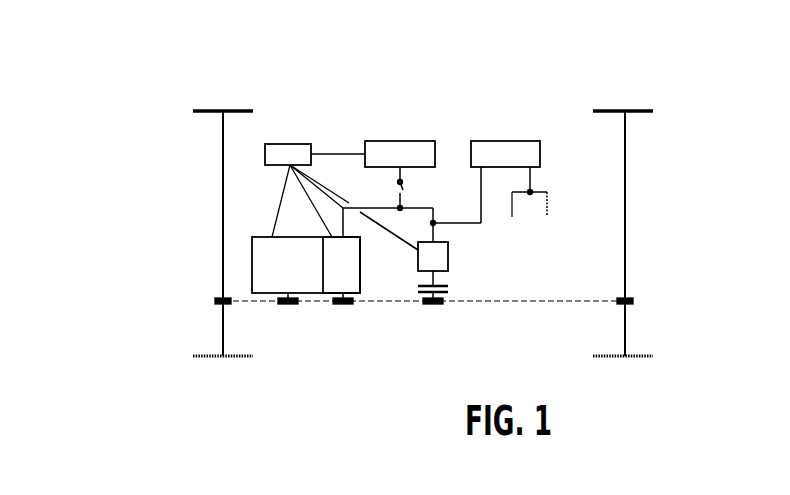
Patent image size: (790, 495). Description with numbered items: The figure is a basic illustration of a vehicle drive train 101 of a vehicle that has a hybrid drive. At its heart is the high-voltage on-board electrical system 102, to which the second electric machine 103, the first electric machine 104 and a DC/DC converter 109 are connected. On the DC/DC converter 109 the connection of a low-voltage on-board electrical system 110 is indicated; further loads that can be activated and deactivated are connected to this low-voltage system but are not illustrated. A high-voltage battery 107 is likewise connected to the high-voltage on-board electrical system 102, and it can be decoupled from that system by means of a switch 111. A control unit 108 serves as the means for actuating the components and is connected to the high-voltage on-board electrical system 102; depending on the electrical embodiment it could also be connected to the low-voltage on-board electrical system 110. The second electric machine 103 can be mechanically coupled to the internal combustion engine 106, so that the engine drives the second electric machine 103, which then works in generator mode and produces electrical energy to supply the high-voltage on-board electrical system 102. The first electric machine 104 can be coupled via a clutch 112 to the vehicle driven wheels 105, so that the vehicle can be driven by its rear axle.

The vehicle drive train 101 is at (158, 275).
The high-voltage on-board electrical system 102 is at (380, 204).
The second electric machine 103 is at (343, 307).
The first electric machine 104 is at (450, 258).
The vehicle driven wheels 105 is at (208, 110).
The internal combustion engine 106 is at (288, 307).
The high-voltage battery 107 is at (400, 141).
The control unit 108 is at (286, 143).
The DC/DC converter 109 is at (504, 141).
The low-voltage on-board electrical system 110 is at (540, 191).
The switch 111 is at (404, 185).
The clutch 112 is at (450, 288).